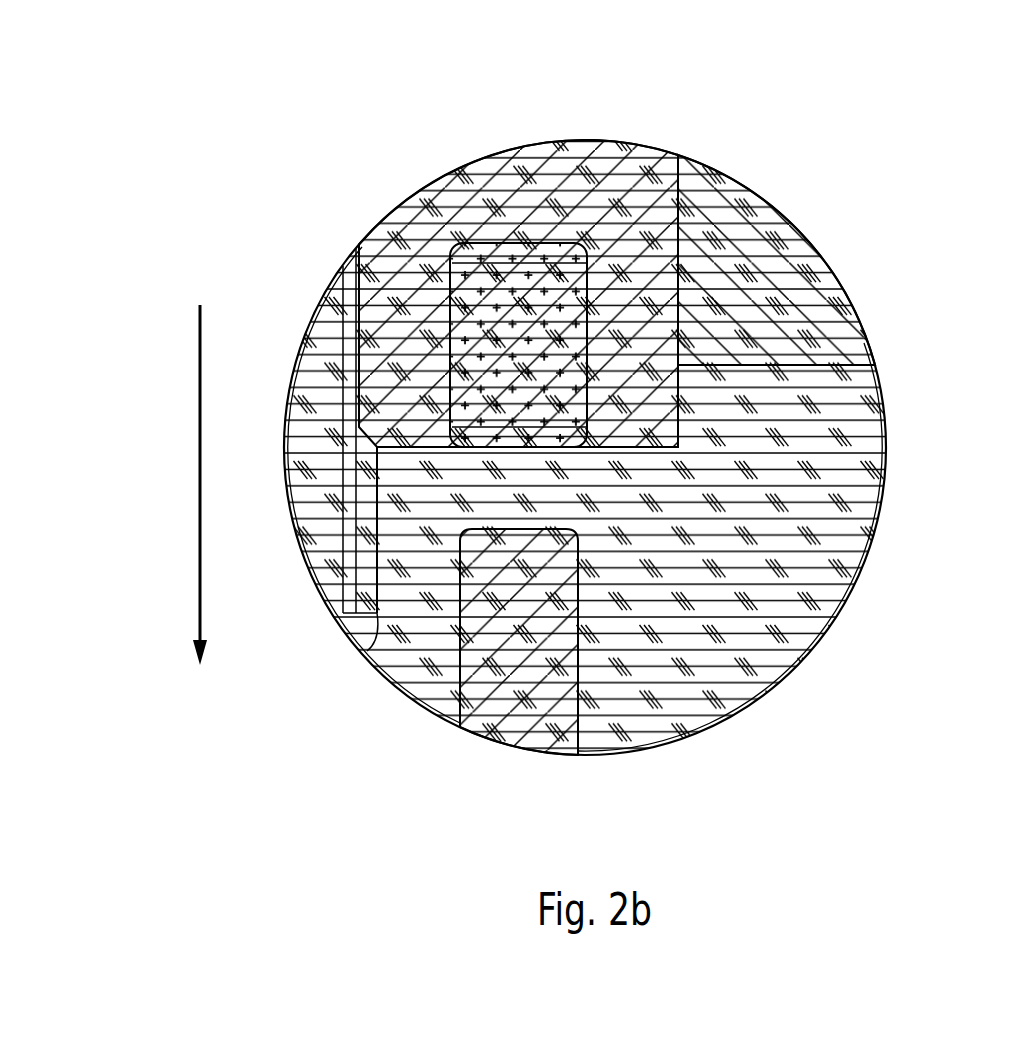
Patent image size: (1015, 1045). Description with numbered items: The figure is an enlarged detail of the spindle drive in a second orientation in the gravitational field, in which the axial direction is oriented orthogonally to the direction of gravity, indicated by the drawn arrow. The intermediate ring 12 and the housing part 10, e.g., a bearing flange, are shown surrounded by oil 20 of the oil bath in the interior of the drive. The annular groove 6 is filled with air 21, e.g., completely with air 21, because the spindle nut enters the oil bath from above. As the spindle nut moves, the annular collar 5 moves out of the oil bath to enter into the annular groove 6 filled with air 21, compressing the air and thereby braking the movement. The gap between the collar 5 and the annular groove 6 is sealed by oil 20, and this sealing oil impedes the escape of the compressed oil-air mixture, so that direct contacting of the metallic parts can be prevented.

The annular collar 5 is at (588, 607).
The annular groove 6 is at (440, 316).
The housing part 10 is at (505, 693).
The intermediate ring 12 is at (440, 212).
The oil 20 is at (805, 575).
The air 21 is at (545, 307).